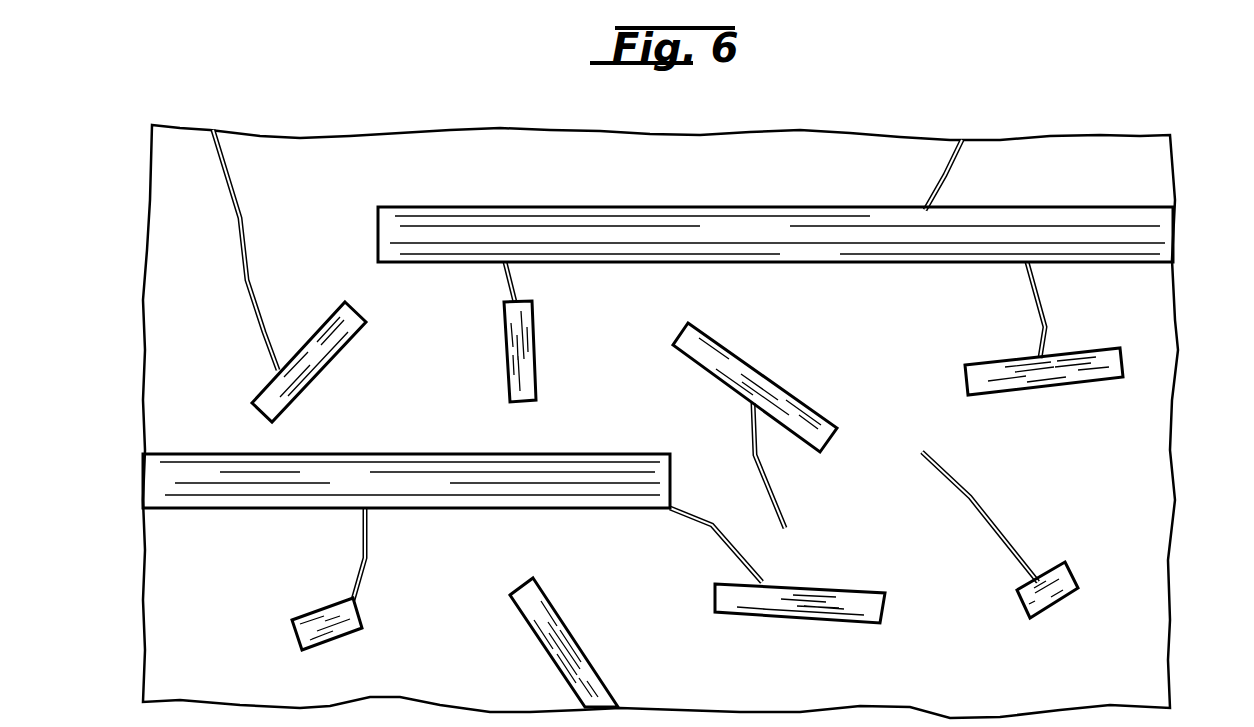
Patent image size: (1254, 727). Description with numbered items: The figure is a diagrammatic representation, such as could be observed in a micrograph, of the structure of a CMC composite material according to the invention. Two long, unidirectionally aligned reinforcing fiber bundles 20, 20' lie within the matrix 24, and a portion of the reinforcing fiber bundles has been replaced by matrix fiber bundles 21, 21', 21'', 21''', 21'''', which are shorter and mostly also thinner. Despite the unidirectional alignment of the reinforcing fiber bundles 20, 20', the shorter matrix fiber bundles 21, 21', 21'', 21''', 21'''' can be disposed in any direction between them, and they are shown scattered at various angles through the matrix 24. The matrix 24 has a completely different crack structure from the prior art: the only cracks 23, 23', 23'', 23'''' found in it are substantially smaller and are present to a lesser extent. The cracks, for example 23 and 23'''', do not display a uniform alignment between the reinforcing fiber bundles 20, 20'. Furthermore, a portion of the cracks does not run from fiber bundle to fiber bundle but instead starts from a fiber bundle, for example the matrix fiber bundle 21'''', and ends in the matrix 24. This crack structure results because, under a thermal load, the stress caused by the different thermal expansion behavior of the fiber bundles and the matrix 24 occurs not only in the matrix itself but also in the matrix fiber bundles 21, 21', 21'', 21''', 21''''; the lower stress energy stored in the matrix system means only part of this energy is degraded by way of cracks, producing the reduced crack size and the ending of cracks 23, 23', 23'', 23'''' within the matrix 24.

The reinforcing fiber bundle 20 is at (775, 176).
The reinforcing fiber bundle 20' is at (367, 459).
The matrix fiber bundle 21 is at (321, 362).
The matrix fiber bundle 21' is at (560, 351).
The matrix fiber bundle 21'' is at (1044, 404).
The matrix fiber bundle 21''' is at (347, 647).
The matrix fiber bundle 21'''' is at (1052, 616).
The crack 23 is at (271, 250).
The crack 23' is at (556, 286).
The crack 23'' is at (406, 554).
The crack 23'''' is at (873, 517).
The matrix 24 is at (1158, 640).